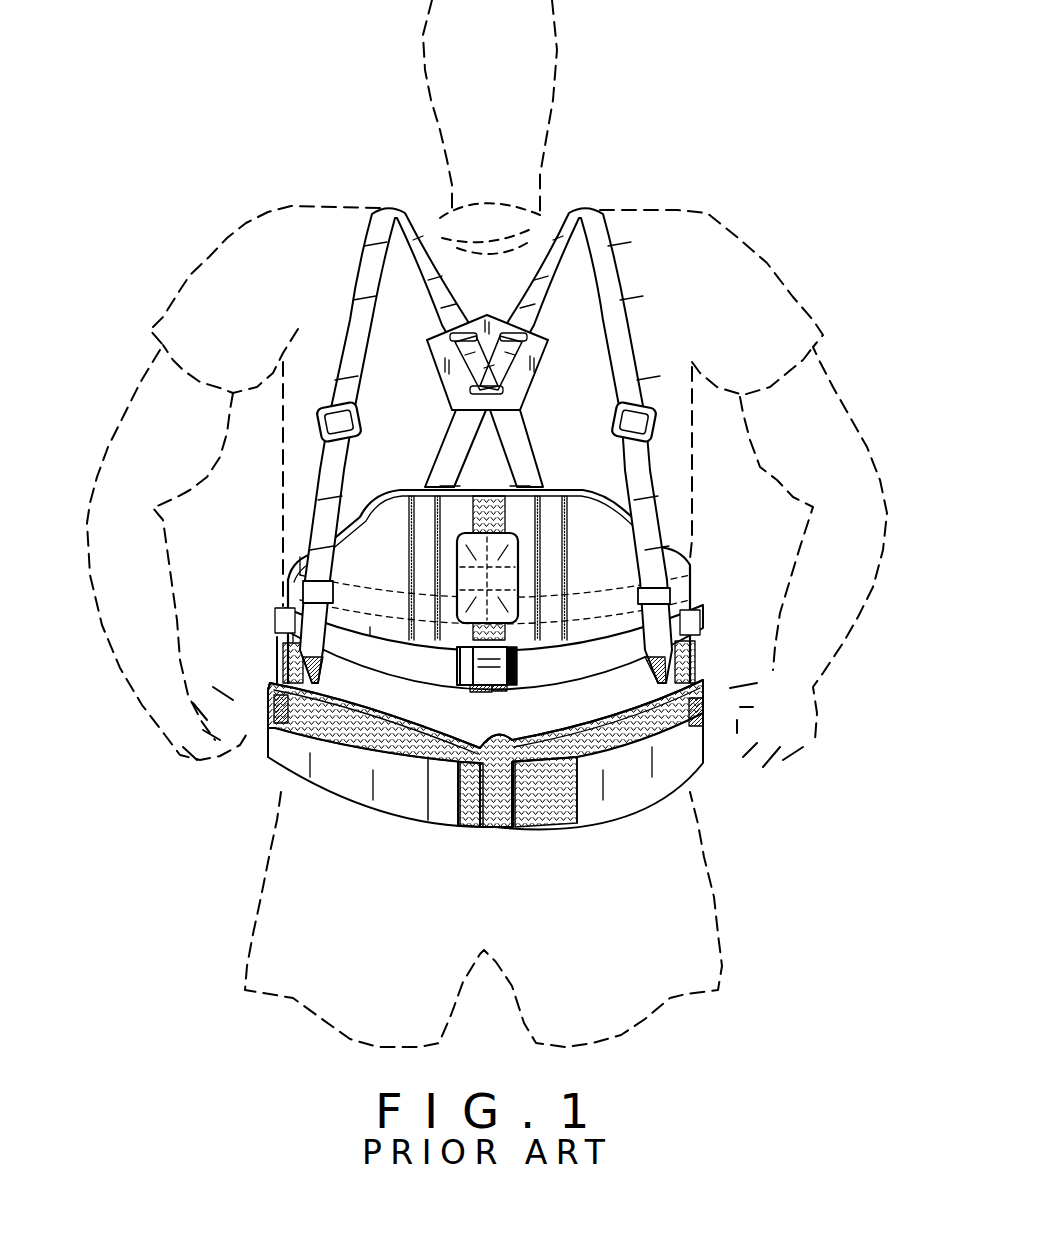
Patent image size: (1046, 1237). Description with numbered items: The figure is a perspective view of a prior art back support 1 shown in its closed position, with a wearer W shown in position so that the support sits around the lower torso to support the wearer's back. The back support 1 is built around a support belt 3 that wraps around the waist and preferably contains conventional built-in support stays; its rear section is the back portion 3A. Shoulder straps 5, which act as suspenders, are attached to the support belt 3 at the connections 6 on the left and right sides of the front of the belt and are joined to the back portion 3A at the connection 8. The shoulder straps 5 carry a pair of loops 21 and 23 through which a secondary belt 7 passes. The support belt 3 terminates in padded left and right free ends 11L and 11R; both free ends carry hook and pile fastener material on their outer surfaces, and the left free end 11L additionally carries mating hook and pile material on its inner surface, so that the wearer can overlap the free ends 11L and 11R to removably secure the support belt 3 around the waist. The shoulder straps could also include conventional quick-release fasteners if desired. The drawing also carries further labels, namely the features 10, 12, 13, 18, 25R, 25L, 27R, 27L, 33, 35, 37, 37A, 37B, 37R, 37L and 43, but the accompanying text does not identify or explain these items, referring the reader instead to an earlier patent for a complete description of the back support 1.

The wearer W is at (563, 28).
The back support 1 is at (320, 805).
The support belt 3 is at (510, 731).
The back portion 3A is at (363, 495).
The shoulder straps 5 is at (620, 278).
The connection of shoulder straps to support belt 6 is at (338, 681).
The secondary belt 7 is at (390, 588).
The connection of shoulder straps to back portion 8 is at (512, 482).
The lumbar pad 10 is at (495, 575).
The right free end 11R is at (458, 829).
The left free end 11L is at (520, 829).
The vertical stays 12 is at (548, 503).
The upper edge of back panel 13 is at (388, 512).
The central vertical strap 18 is at (567, 502).
The loop 21 is at (342, 608).
The loop 23 is at (632, 612).
The right buckle half 25R is at (439, 666).
The left buckle half 25L is at (520, 666).
The right buckle release 27R is at (473, 692).
The left buckle release 27L is at (494, 692).
The strap connector 33 is at (430, 373).
The connector plate 35 is at (523, 380).
The outer belt 37 is at (418, 810).
The belt end tabs 37A is at (278, 700).
The belt band 37B is at (357, 780).
The right belt end 37R is at (443, 825).
The left belt end 37L is at (540, 829).
The belt end fasteners 43 is at (278, 714).